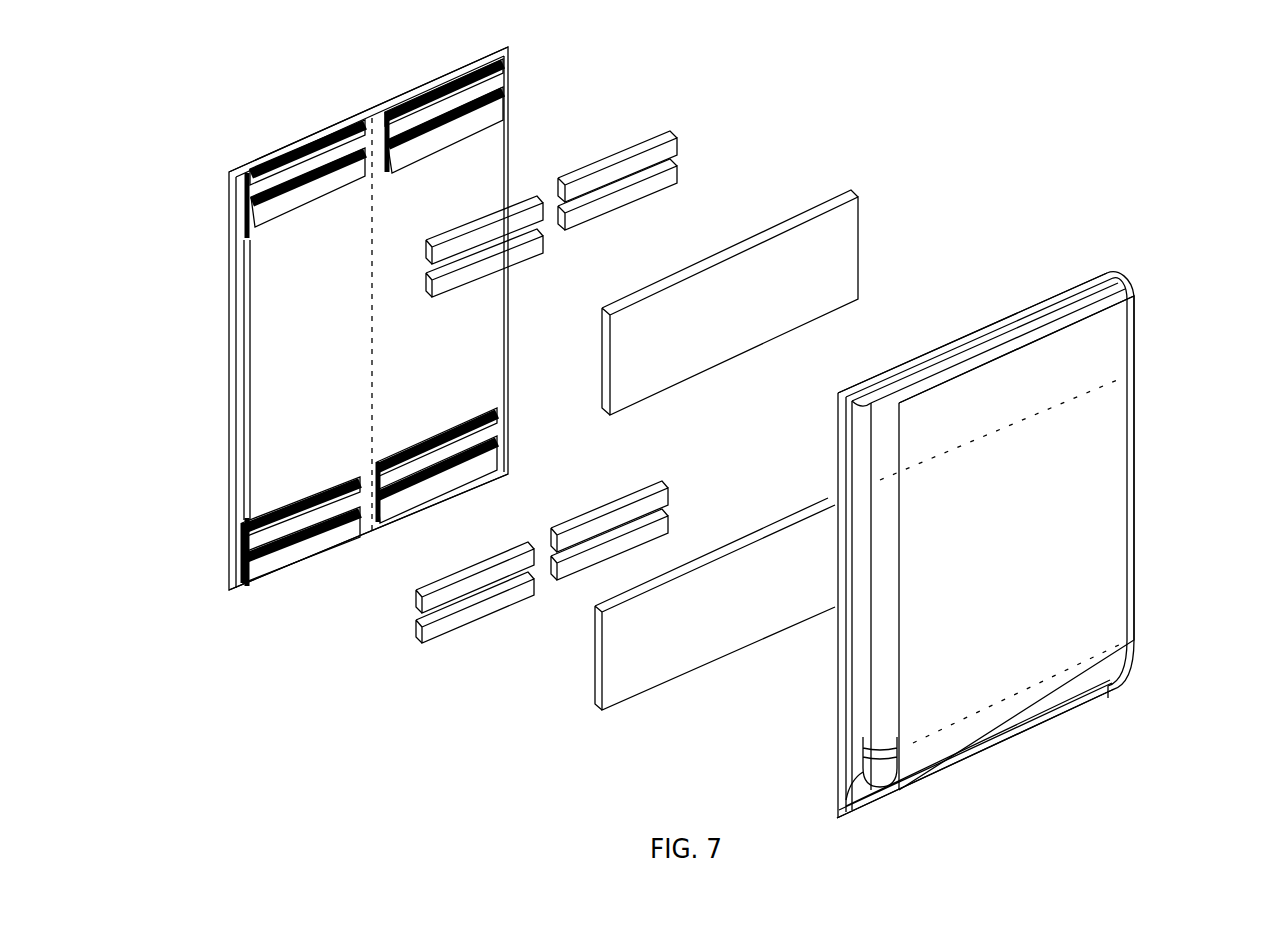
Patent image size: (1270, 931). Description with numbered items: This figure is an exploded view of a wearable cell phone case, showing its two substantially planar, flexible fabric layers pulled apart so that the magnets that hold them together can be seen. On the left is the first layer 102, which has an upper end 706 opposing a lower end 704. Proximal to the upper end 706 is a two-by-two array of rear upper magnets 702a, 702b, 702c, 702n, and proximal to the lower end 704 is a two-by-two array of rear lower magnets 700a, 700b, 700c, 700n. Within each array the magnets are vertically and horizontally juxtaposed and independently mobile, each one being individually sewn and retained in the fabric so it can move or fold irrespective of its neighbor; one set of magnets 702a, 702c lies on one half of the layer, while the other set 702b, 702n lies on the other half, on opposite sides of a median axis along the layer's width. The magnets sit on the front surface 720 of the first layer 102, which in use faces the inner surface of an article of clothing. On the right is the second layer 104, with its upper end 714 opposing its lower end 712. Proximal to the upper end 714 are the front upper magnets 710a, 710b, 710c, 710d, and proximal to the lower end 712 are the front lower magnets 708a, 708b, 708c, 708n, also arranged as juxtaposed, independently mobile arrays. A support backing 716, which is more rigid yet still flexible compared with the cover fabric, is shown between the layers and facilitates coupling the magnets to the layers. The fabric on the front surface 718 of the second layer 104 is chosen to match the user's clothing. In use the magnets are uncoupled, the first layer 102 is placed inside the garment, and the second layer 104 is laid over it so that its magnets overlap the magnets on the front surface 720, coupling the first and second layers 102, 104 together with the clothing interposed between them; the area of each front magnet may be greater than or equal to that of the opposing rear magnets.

The first layer 102 is at (290, 283).
The second layer 104 is at (1102, 340).
The rear lower magnet 700a is at (262, 574).
The rear lower magnet 700b is at (440, 480).
The rear lower magnet 700c is at (472, 437).
The rear lower magnet 700n is at (260, 527).
The rear upper magnet 702a is at (261, 183).
The rear upper magnet 702b is at (413, 117).
The rear upper magnet 702c is at (268, 218).
The rear upper magnet 702n is at (482, 116).
The lower end 704 is at (244, 595).
The upper end 706 is at (289, 145).
The front lower magnet 708a is at (443, 627).
The front lower magnet 708b is at (660, 530).
The front lower magnet 708c is at (650, 497).
The front lower magnet 708n is at (442, 597).
The front upper magnet 710a is at (668, 150).
The front upper magnet 710b is at (522, 208).
The front upper magnet 710c is at (515, 243).
The front upper magnet 710d is at (605, 205).
The lower end 712 is at (1087, 714).
The upper end 714 is at (1046, 292).
The support backing 716 is at (838, 272).
The front surface 718 is at (1109, 418).
The front surface 720 is at (318, 345).